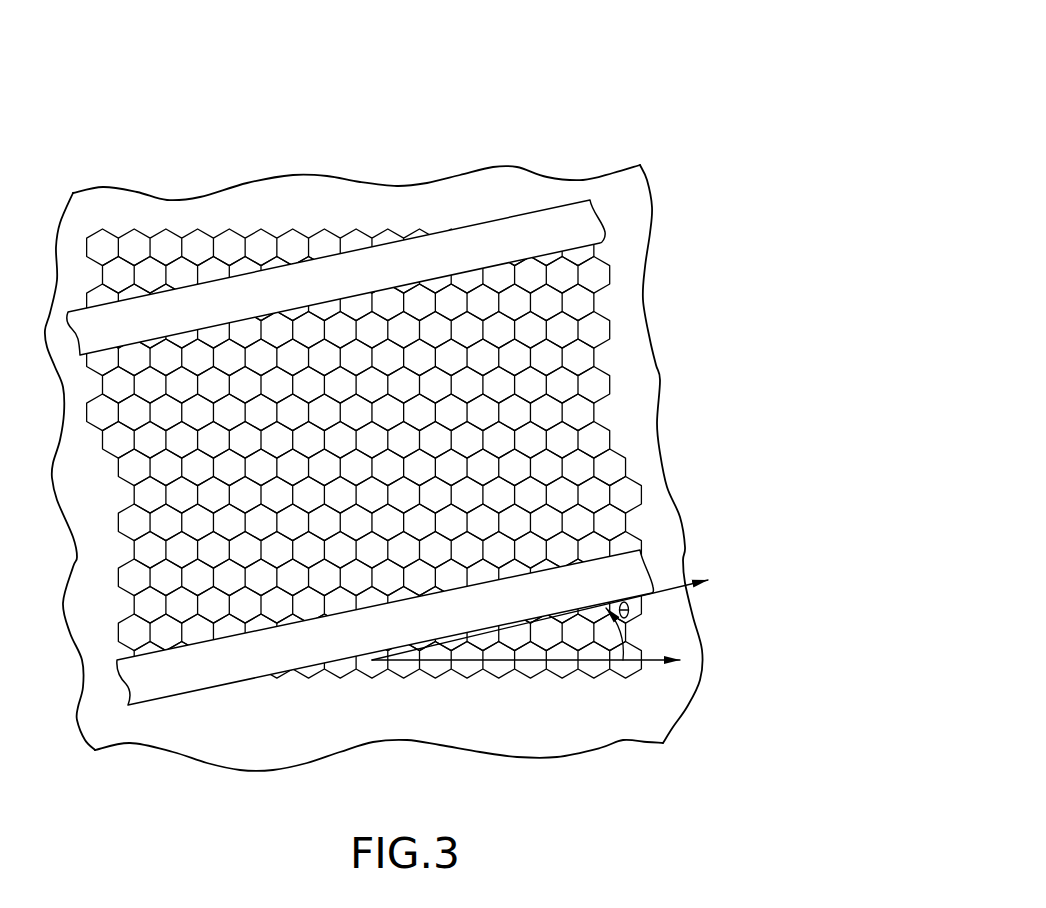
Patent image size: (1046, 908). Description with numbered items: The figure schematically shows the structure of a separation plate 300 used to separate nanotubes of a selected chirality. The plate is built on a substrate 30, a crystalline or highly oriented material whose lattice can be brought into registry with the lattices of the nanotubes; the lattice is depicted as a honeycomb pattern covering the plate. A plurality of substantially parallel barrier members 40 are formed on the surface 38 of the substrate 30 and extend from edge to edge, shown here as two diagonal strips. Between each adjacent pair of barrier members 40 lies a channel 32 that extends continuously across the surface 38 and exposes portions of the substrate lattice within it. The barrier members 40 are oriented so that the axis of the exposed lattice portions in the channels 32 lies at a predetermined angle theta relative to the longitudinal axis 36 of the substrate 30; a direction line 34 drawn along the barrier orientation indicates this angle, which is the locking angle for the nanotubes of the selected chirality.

The separation plate 300 is at (628, 116).
The substrate 30 is at (651, 216).
The channel 32 is at (364, 207).
The strip direction line 34 is at (683, 594).
The longitudinal axis 36 is at (645, 665).
The surface 38 is at (660, 491).
The barrier member 40 is at (533, 232).